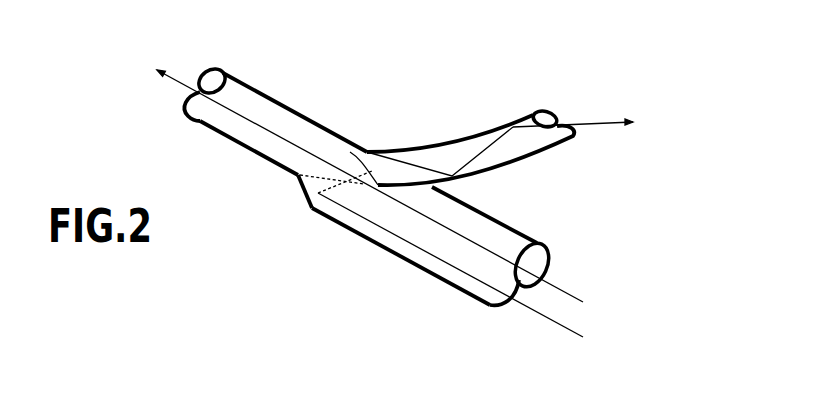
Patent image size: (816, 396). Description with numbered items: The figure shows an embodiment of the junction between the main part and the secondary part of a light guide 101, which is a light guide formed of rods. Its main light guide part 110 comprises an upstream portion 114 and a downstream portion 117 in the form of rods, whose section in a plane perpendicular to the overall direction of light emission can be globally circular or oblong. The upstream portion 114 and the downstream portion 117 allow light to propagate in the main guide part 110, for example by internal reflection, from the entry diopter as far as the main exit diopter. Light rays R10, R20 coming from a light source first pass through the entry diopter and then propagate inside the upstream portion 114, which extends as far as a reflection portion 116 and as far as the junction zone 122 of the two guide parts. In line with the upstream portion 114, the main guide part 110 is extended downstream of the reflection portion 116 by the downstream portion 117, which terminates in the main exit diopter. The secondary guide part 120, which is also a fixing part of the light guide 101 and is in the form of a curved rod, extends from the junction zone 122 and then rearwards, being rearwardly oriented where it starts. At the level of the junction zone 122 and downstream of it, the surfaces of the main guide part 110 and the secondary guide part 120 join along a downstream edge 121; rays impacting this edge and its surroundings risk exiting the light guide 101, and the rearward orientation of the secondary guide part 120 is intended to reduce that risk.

The light guide 101 is at (388, 90).
The main light guide part 110 is at (259, 166).
The upstream portion 114 is at (385, 246).
The reflection portion 116 is at (313, 183).
The downstream portion 117 is at (222, 121).
The secondary guide part 120 is at (520, 173).
The downstream edge 121 is at (357, 163).
The junction zone 122 is at (368, 155).
The light ray R10 is at (568, 295).
The light ray R20 is at (537, 344).